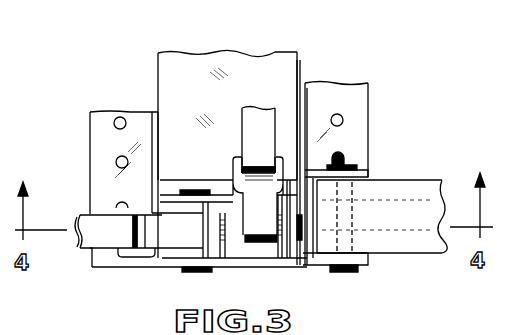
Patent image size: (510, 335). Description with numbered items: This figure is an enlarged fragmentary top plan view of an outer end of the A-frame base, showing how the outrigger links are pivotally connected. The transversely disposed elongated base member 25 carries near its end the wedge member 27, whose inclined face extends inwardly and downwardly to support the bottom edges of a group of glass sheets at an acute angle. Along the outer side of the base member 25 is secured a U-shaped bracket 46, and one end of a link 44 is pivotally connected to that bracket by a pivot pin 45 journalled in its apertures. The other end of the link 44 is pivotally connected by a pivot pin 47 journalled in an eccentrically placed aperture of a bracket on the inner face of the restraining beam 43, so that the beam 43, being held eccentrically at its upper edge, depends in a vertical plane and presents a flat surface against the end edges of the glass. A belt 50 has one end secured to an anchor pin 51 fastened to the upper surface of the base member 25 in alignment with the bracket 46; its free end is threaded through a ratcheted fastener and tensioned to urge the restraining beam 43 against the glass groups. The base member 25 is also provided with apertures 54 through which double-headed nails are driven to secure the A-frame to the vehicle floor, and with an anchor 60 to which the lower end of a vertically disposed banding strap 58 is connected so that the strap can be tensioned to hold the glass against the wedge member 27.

The base member 25 is at (307, 87).
The wedge member 27 is at (207, 57).
The restraining beam 43 is at (509, 334).
The link 44 is at (422, 186).
The pivot pin 45 is at (343, 272).
The U-shaped bracket 46 is at (370, 168).
The pivot pin 47 is at (440, 325).
The belt 50 is at (90, 237).
The anchor pin 51 is at (186, 270).
The aperture 54 is at (116, 158).
The vertically disposed banding strap 58 is at (250, 117).
The anchor 60 is at (282, 238).